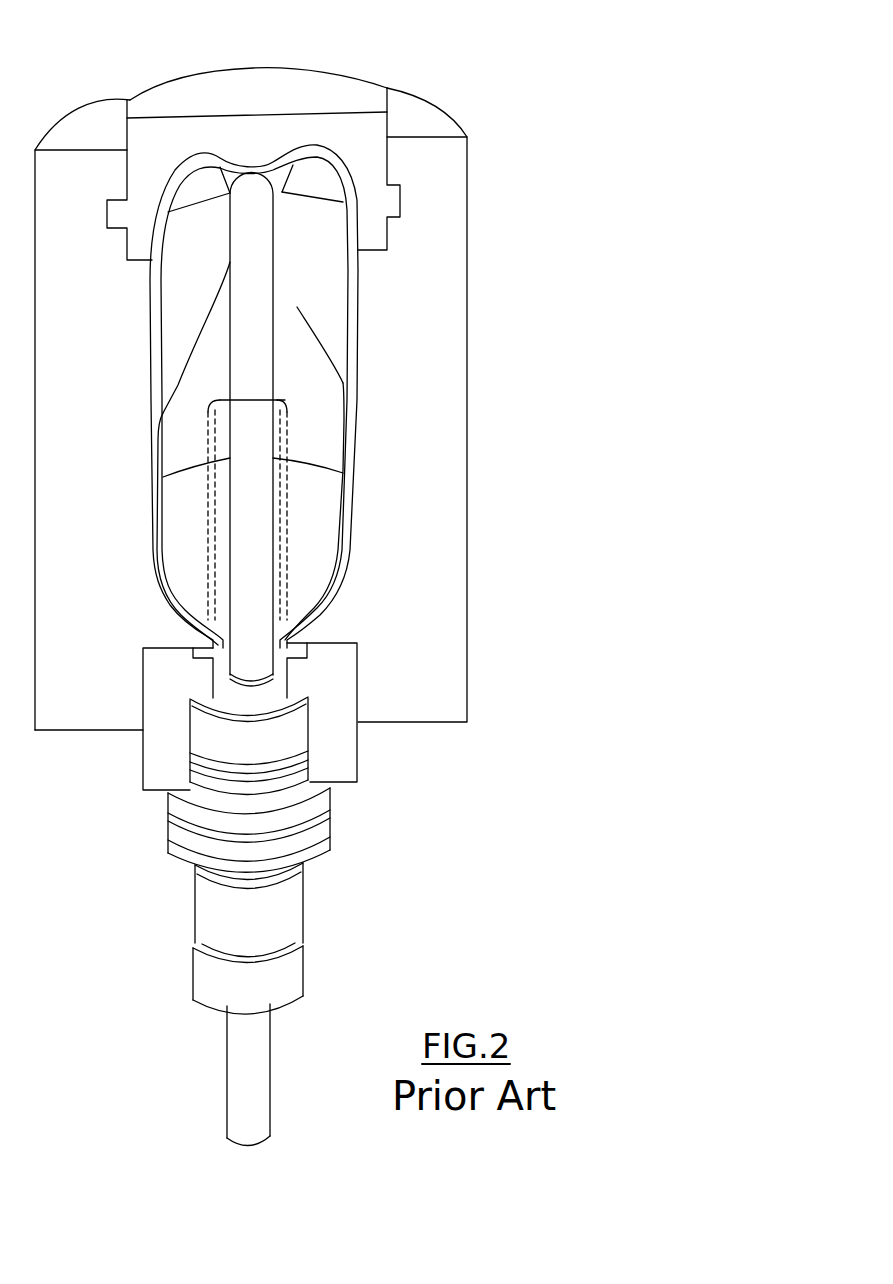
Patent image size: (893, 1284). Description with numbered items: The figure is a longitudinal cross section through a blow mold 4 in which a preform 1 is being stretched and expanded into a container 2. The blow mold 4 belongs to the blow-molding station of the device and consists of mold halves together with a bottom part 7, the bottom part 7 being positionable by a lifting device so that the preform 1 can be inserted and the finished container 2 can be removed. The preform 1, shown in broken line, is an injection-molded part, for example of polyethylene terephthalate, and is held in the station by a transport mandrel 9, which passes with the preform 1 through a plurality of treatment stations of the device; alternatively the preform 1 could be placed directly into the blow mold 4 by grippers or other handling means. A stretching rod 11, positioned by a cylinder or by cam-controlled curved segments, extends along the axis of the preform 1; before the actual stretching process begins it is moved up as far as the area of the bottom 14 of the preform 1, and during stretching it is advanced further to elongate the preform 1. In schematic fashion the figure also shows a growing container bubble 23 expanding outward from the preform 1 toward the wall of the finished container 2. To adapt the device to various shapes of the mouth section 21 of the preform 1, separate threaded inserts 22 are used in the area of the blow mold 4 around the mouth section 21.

The preform 1 is at (290, 543).
The container 2 is at (357, 343).
The blow mold 4 is at (430, 403).
The bottom part 7 is at (335, 85).
The transport mandrel 9 is at (317, 847).
The stretching rod 11 is at (227, 1088).
The bottom 14 is at (290, 398).
The mouth section 21 is at (287, 667).
The threaded inserts 22 is at (343, 748).
The container bubble 23 is at (297, 308).